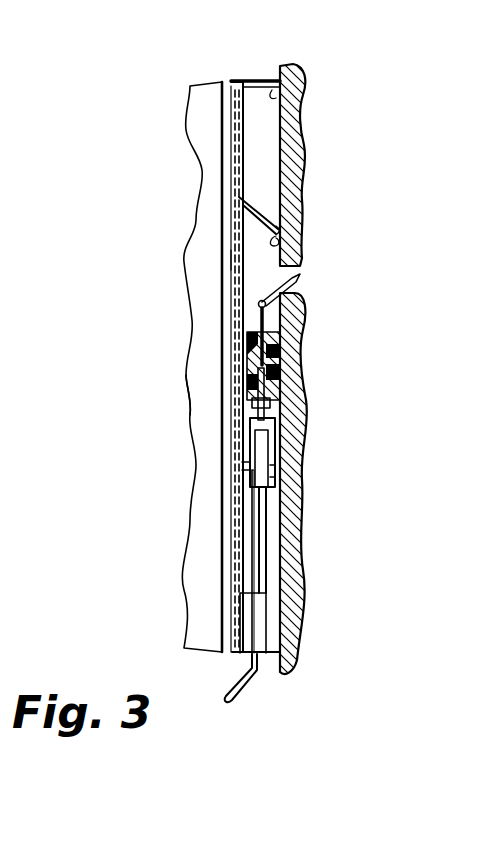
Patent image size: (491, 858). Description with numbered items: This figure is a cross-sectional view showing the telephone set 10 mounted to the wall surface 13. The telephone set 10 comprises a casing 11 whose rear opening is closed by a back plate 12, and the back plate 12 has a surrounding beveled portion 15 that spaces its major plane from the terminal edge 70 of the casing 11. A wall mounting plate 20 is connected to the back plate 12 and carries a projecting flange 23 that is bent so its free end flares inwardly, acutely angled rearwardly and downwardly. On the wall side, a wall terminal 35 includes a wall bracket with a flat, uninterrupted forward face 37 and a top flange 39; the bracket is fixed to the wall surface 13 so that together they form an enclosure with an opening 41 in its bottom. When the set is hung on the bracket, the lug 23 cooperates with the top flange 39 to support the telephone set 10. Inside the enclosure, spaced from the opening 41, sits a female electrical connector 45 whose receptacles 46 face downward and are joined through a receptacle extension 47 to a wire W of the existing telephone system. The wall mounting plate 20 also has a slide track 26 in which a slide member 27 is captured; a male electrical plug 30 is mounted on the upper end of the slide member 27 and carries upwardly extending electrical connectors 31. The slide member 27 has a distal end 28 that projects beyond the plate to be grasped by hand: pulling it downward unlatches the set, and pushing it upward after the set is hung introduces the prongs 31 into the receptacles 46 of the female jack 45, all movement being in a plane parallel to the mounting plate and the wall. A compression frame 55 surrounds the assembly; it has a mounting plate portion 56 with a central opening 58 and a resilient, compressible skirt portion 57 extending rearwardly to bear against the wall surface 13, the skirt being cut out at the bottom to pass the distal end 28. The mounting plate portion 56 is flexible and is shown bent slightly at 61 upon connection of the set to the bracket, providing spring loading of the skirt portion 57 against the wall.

The telephone set 10 is at (205, 96).
The casing 11 is at (193, 415).
The back plate 12 is at (236, 180).
The wall surface 13 is at (298, 204).
The beveled portion 15 is at (222, 140).
The wall mounting plate 20 is at (244, 144).
The flange 23 is at (257, 212).
The slide track 26 is at (266, 553).
The slide member 27 is at (260, 612).
The distal end 28 is at (240, 698).
The electrical plug 30 is at (262, 449).
The electrical connectors 31 is at (266, 384).
The wall terminal 35 is at (276, 242).
The forward face 37 is at (241, 258).
The top flange 39 is at (278, 224).
The opening 41 is at (270, 477).
The female electrical connector 45 is at (272, 358).
The receptacles 46 is at (270, 404).
The receptacle extension 47 is at (264, 324).
The compression frame 55 is at (263, 82).
The mounting plate portion 56 is at (232, 590).
The skirt portion 57 is at (272, 98).
The central opening 58 is at (232, 540).
The bent portion 61 is at (237, 78).
The terminal edge 70 is at (222, 330).
The wire W is at (298, 276).